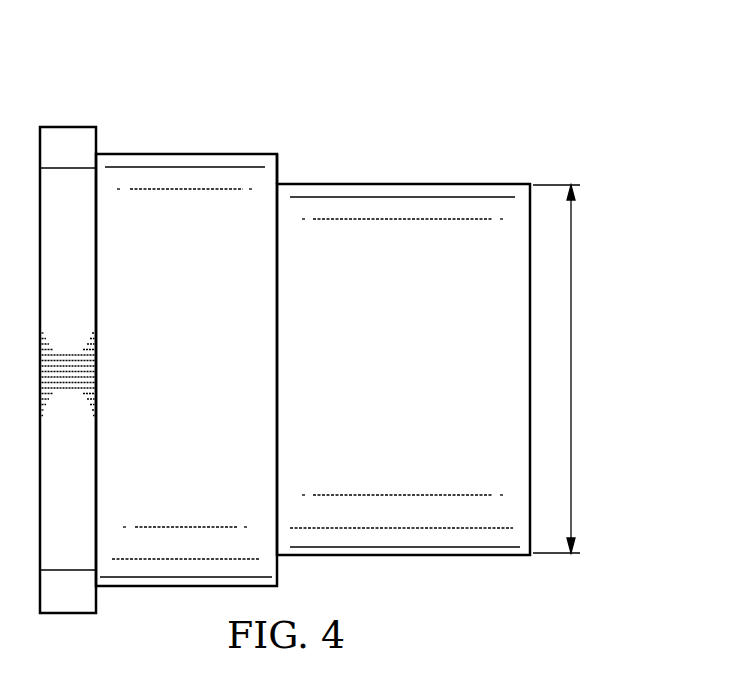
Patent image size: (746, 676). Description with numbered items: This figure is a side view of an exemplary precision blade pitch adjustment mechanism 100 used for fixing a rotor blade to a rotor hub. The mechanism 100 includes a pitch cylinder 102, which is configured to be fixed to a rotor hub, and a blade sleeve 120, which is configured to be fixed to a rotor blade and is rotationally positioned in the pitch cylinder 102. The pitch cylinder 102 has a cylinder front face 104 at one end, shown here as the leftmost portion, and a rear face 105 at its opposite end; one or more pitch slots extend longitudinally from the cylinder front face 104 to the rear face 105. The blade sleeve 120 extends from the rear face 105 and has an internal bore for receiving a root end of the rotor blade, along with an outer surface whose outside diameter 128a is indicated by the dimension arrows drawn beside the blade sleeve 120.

The precision blade pitch adjustment mechanism 100 is at (417, 70).
The pitch cylinder 102 is at (187, 153).
The cylinder front face 104 is at (67, 125).
The rear face 105 is at (280, 171).
The blade sleeve 120 is at (464, 182).
The outside diameter 128a is at (572, 370).